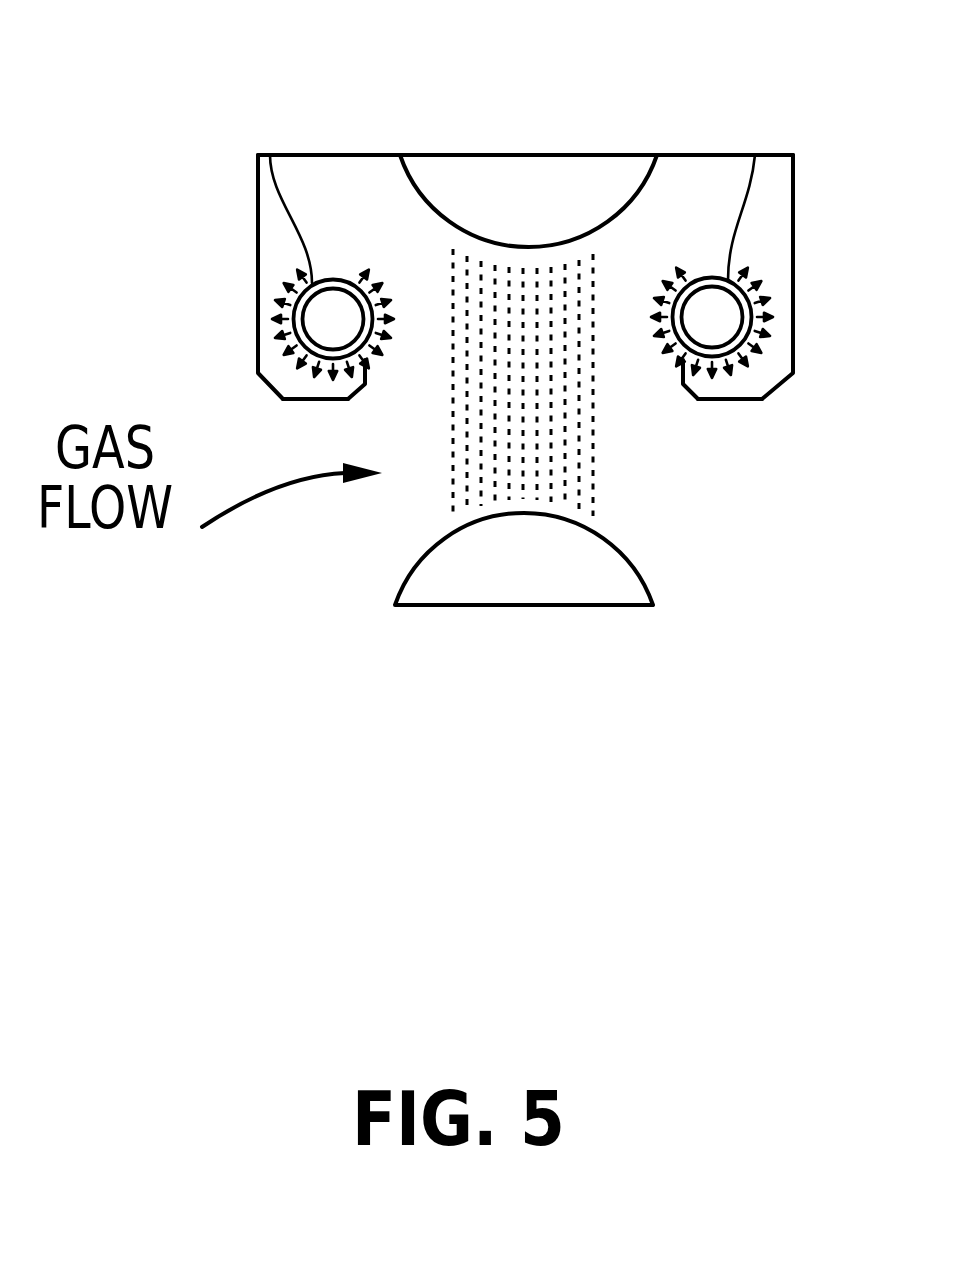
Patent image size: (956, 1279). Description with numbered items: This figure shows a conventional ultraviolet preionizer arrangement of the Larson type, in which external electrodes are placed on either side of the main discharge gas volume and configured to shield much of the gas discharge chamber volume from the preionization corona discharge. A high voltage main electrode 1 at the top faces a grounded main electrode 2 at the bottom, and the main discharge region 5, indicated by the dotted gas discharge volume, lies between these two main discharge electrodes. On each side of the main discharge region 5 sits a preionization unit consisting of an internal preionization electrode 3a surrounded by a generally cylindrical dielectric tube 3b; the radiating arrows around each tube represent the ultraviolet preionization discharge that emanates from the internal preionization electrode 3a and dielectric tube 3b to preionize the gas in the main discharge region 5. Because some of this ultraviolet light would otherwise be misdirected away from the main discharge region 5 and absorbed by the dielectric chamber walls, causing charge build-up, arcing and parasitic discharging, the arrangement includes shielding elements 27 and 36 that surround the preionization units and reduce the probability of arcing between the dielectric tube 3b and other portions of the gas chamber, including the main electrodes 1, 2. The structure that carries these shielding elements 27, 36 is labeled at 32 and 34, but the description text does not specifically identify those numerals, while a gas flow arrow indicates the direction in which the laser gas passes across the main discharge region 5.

The high voltage main electrode 1 is at (567, 200).
The grounded main electrode 2 is at (538, 585).
The internal preionization electrode 3a is at (332, 322).
The dielectric tube 3b is at (270, 155).
The main discharge region 5 is at (447, 468).
The shielding element 27 is at (258, 211).
The top plate 32 is at (350, 155).
The bottom surface 34 is at (308, 403).
The shielding element 36 is at (365, 372).